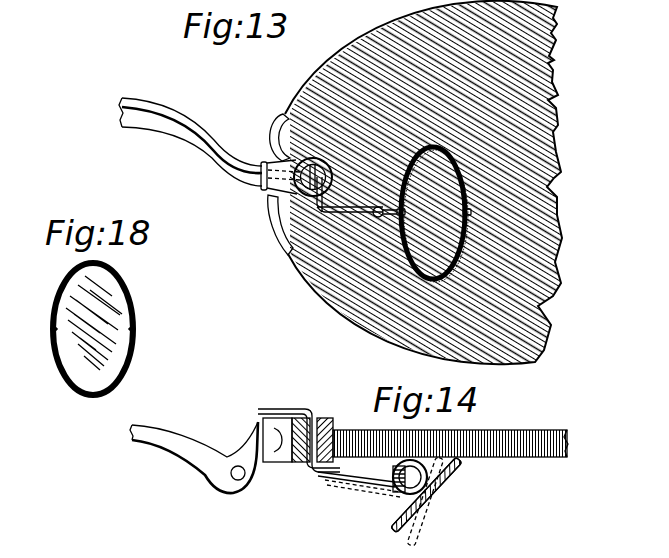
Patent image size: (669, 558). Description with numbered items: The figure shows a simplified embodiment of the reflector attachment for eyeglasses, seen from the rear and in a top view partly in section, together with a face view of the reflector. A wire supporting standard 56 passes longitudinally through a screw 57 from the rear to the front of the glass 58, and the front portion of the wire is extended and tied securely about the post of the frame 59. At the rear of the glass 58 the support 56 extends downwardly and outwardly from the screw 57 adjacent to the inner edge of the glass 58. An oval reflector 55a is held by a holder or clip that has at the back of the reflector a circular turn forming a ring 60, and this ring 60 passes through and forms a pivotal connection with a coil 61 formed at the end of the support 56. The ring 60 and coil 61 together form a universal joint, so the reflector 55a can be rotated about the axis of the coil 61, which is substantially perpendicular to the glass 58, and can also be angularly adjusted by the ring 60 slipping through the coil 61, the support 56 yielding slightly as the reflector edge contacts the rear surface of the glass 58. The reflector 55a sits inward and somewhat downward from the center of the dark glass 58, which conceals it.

In FIG. 13, the oval reflector 55a is at (443, 257).
In FIG. 14, the oval reflector 55a is at (438, 490).
In FIG. 13, the wire supporting standard 56 is at (341, 212).
In FIG. 14, the wire supporting standard 56 is at (337, 479).
In FIG. 13, the screw 57 is at (283, 207).
In FIG. 14, the screw 57 is at (298, 468).
In FIG. 13, the glass 58 is at (363, 307).
In FIG. 14, the glass 58 is at (533, 452).
In FIG. 13, the frame 59 is at (220, 178).
In FIG. 14, the frame 59 is at (203, 473).
In FIG. 13, the ring 60 is at (386, 220).
In FIG. 14, the ring 60 is at (398, 495).
In FIG. 13, the coil 61 is at (385, 202).
In FIG. 14, the coil 61 is at (395, 477).